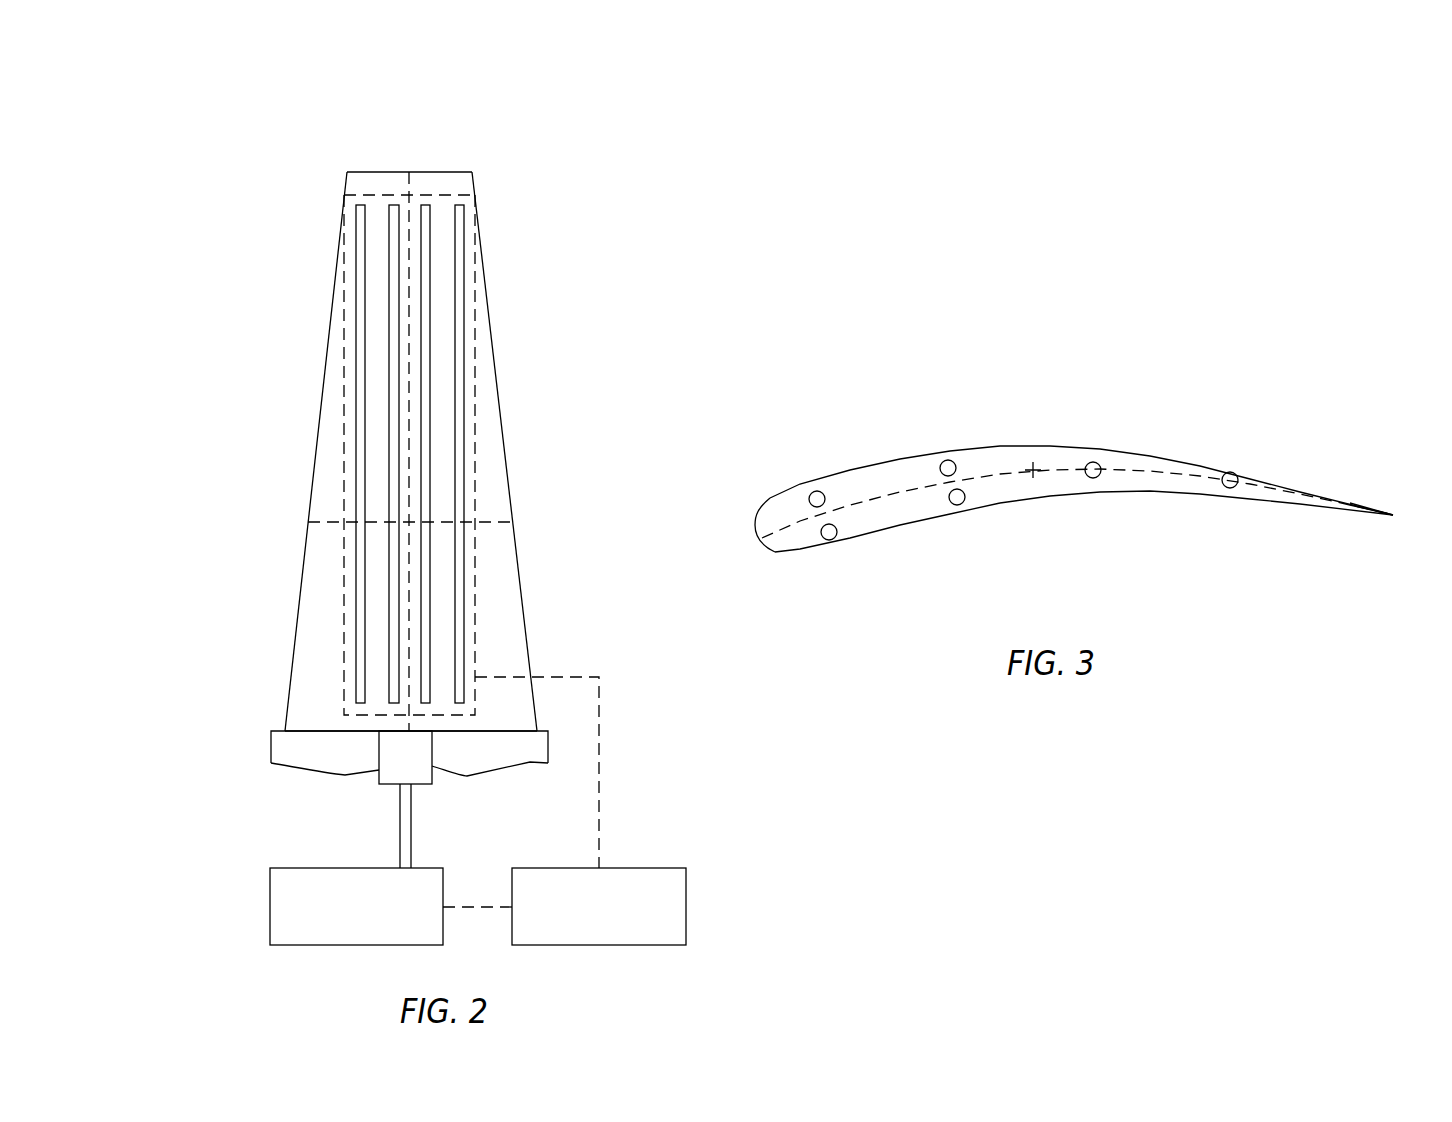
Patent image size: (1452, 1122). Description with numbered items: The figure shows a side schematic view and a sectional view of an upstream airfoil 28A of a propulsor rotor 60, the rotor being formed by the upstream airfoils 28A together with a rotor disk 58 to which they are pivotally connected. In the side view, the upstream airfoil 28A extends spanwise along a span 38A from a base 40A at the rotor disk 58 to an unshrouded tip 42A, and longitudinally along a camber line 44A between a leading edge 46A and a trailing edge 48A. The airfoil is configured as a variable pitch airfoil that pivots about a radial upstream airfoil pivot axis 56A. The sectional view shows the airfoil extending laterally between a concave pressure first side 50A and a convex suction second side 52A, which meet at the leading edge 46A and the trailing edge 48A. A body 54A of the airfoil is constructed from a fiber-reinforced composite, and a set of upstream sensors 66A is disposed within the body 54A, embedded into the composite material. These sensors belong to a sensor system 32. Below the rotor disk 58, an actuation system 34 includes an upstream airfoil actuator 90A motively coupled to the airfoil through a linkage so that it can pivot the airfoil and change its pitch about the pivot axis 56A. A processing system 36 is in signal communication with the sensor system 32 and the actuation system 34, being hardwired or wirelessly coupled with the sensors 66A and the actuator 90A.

In FIG. 2, the propulsor rotor 60 is at (256, 162).
In FIG. 2, the upstream airfoil 28A is at (526, 189).
In FIG. 3, the upstream airfoil 28A is at (912, 447).
In FIG. 2, the tip 42A is at (368, 172).
In FIG. 2, the span 38A is at (410, 191).
In FIG. 3, the span 38A is at (1036, 475).
In FIG. 3, the upstream airfoil pivot axis 56A is at (1033, 470).
In FIG. 2, the upstream sensor 66A is at (390, 308).
In FIG. 3, the upstream sensor 66A is at (838, 527).
In FIG. 2, the leading edge 46A is at (318, 413).
In FIG. 3, the leading edge 46A is at (760, 538).
In FIG. 2, the trailing edge 48A is at (503, 417).
In FIG. 3, the trailing edge 48A is at (1393, 515).
In FIG. 2, the camber line 44A is at (485, 522).
In FIG. 3, the camber line 44A is at (883, 500).
In FIG. 2, the sensor system 32 is at (337, 592).
In FIG. 2, the body 54A is at (305, 665).
In FIG. 3, the body 54A is at (800, 550).
In FIG. 3, the second side 52A is at (978, 447).
In FIG. 3, the first side 50A is at (995, 505).
In FIG. 2, the rotor disk 58 is at (271, 745).
In FIG. 2, the base 40A is at (307, 732).
In FIG. 2, the upstream airfoil actuator 90A is at (270, 890).
In FIG. 2, the actuation system 34 is at (255, 957).
In FIG. 2, the processing system 36 is at (690, 908).